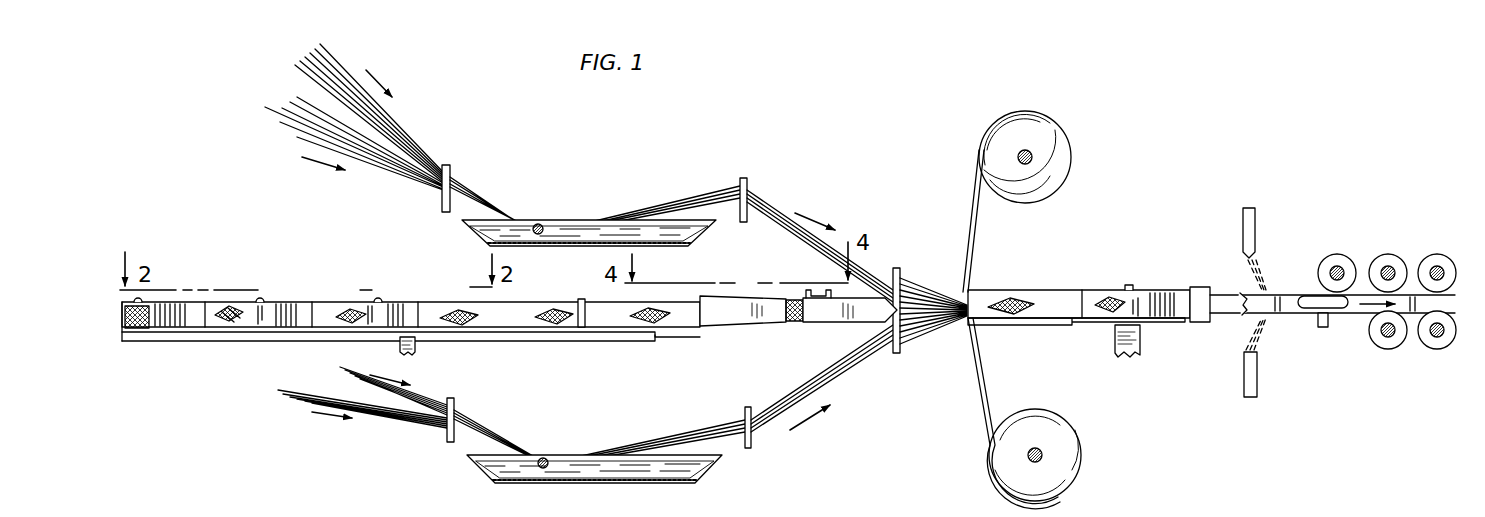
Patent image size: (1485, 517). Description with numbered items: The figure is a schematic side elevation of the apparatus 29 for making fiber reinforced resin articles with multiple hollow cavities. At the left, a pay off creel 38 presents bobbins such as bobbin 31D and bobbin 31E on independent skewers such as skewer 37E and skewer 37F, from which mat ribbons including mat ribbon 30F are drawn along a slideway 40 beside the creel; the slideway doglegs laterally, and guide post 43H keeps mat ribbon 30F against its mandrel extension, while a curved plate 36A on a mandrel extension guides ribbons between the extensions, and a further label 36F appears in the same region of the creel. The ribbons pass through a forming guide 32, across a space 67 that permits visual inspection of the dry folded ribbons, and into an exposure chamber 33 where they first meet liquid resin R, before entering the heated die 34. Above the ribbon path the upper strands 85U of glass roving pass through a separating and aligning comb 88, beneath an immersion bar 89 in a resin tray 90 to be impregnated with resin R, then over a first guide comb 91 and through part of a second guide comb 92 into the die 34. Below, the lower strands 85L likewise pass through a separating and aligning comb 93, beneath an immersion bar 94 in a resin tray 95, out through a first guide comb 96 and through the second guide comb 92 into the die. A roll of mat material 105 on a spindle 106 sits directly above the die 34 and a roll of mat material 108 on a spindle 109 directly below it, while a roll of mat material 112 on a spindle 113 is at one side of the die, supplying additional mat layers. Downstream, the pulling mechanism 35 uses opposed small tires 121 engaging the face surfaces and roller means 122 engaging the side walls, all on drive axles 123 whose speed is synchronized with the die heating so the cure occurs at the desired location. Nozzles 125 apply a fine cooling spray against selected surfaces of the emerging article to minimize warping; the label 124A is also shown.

The apparatus 29 is at (1118, 215).
The mat ribbon 30F is at (462, 318).
The bobbin 31D is at (163, 320).
The bobbin 31E is at (258, 322).
The forming guide 32 is at (748, 325).
The exposure chamber 33 is at (846, 326).
The heated die 34 is at (1078, 285).
The pulling mechanism 35 is at (1386, 252).
The coupling 36F is at (345, 305).
The skewer 37E is at (260, 298).
The skewer 37F is at (380, 296).
The pay off creel 38 is at (133, 340).
The slideway 40 is at (530, 333).
The guide post 43H is at (584, 315).
The space 67 is at (797, 326).
The upper strands 85U is at (300, 90).
The lower strands 85L is at (296, 398).
The separating and aligning comb 88 is at (452, 176).
The immersion bar 89 is at (538, 224).
The resin tray 90 is at (590, 252).
The first guide comb 91 is at (742, 180).
The second guide comb 92 is at (897, 353).
The separating and aligning comb 93 is at (449, 440).
The immersion bar 94 is at (543, 458).
The resin tray 95 is at (632, 484).
The first guide comb 96 is at (747, 448).
The roll of mat material 105 is at (1068, 160).
The spindle 106 is at (1028, 152).
The roll of mat material 108 is at (1060, 440).
The spindle 109 is at (1038, 460).
The roll of mat material 112 is at (1140, 310).
The spindle 113 is at (1130, 284).
The small tires 121 is at (1322, 260).
The roller means 122 is at (1298, 308).
The drive axles 123 is at (1395, 268).
The nozzles 125 is at (1255, 212).
The resin R is at (698, 243).
The curved plate 36A is at (1199, 507).
The guide 124A is at (1266, 508).